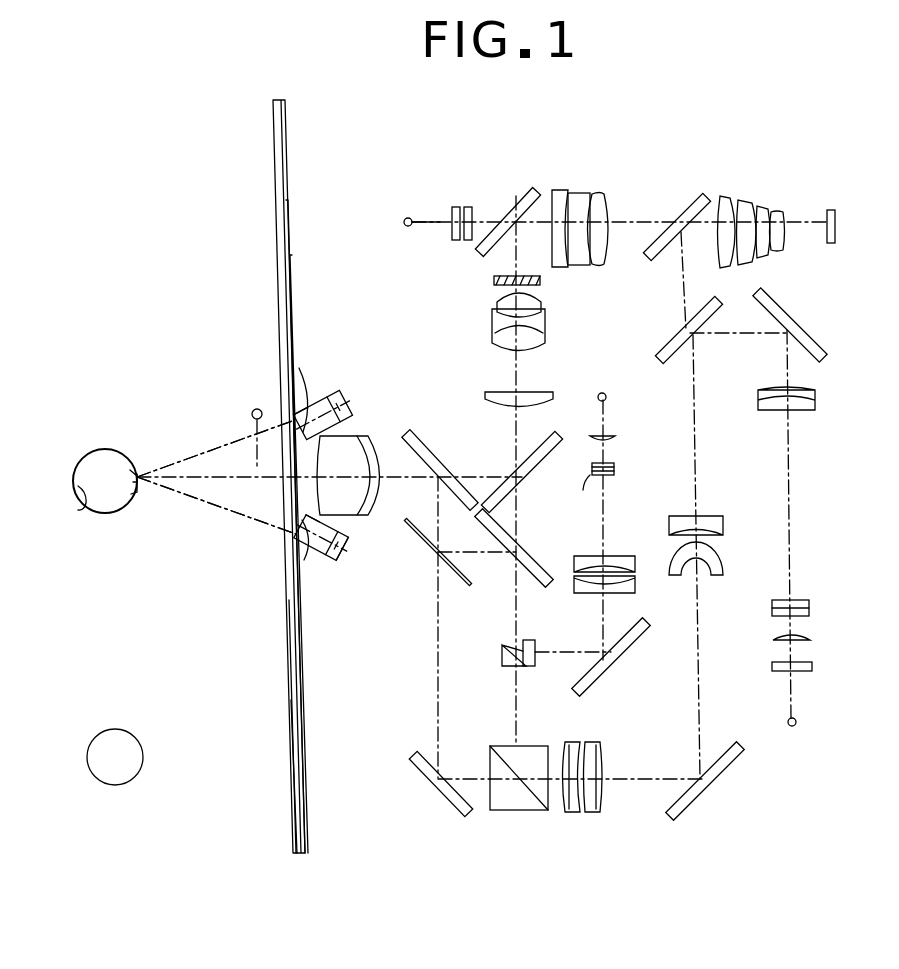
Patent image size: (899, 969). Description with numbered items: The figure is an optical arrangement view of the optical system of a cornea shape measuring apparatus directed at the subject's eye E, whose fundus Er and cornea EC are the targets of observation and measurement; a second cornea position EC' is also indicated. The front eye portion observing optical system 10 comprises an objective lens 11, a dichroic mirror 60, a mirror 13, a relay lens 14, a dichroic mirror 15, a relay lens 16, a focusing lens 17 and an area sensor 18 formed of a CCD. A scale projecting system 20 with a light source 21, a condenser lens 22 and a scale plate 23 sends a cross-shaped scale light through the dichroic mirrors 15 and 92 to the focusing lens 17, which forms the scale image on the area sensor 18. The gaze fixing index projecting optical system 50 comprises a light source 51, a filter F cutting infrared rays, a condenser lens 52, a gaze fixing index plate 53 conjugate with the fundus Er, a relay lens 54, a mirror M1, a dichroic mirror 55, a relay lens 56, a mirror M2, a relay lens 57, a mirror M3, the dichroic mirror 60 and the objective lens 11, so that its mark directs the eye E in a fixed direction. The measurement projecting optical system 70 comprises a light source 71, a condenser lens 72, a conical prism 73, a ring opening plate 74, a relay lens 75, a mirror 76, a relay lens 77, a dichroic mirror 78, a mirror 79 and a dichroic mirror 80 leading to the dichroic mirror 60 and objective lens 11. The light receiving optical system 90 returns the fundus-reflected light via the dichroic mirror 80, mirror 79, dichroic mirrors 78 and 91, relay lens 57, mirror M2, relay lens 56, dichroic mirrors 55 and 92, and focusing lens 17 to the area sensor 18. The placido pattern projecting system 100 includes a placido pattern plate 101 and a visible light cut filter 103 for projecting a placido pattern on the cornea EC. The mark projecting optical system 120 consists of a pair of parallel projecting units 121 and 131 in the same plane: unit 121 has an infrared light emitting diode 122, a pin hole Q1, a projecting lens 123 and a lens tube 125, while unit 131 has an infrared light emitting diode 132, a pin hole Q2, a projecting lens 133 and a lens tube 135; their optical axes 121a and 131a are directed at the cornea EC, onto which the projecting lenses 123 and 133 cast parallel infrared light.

The front eye portion observing optical system 10 is at (630, 160).
The objective lens 11 is at (384, 492).
The mirror 13 is at (530, 478).
The relay lens 14 is at (560, 290).
The dichroic mirror 15 is at (516, 192).
The relay lens 16 is at (547, 186).
The focusing lens 17 is at (716, 189).
The area sensor 18 is at (838, 218).
The scale projecting system 20 is at (440, 233).
The light source 21 is at (404, 220).
The condenser lens 22 is at (453, 210).
The scale plate 23 is at (470, 210).
The gaze fixing index projecting optical system 50 is at (798, 502).
The light source 51 is at (797, 722).
The condenser lens 52 is at (811, 638).
The gaze fixing index plate 53 is at (811, 606).
The relay lens 54 is at (816, 401).
The dichroic mirror 55 is at (705, 316).
The relay lens 56 is at (724, 538).
The relay lens 57 is at (583, 813).
The dichroic mirror 60 is at (425, 445).
The measurement projecting optical system 70 is at (612, 538).
The light source 71 is at (607, 394).
The condenser lens 72 is at (616, 437).
The conical prism 73 is at (615, 468).
The ring opening plate 74 is at (585, 495).
The relay lens 75 is at (636, 575).
The mirror 76 is at (622, 667).
The relay lens 77 is at (530, 667).
The dichroic mirror 78 is at (502, 648).
The mirror 79 is at (520, 545).
The dichroic mirror 80 is at (428, 535).
The light receiving optical system 90 is at (702, 480).
The dichroic mirror 91 is at (515, 812).
The dichroic mirror 92 is at (675, 216).
The placido pattern projecting system 100 is at (260, 278).
The placido pattern plate 101 is at (304, 735).
The visible light cut filter 103 is at (296, 807).
The mark projecting optical system 120 is at (313, 357).
The parallel projecting unit 121 is at (318, 557).
The optical axis 121a is at (190, 503).
The infrared light emitting diode 122 is at (332, 562).
The projecting lens 123 is at (300, 558).
The lens tube 125 is at (344, 540).
The parallel projecting unit 131 is at (338, 398).
The optical axis 131a is at (212, 450).
The infrared light emitting diode 132 is at (346, 418).
The projecting lens 133 is at (300, 370).
The lens tube 135 is at (328, 398).
The subject's eye E is at (105, 513).
The fundus Er is at (87, 512).
The cornea EC is at (149, 424).
The cornea (displaced) EC' is at (119, 786).
The pin hole Q1 is at (325, 560).
The pin hole Q2 is at (350, 398).
The mirror M1 is at (800, 318).
The mirror M2 is at (718, 800).
The mirror M3 is at (443, 800).
The filter F is at (813, 667).